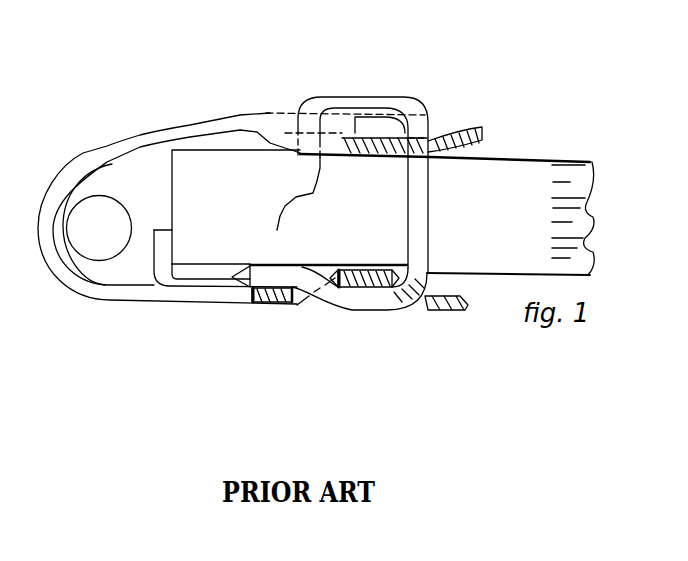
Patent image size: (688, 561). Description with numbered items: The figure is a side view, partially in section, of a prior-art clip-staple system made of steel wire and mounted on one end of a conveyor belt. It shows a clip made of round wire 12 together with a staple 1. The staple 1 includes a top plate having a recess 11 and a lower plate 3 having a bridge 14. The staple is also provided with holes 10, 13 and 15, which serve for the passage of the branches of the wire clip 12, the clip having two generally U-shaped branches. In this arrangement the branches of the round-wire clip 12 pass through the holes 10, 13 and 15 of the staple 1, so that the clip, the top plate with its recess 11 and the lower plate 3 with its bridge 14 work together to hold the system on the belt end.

The staple 1 is at (107, 146).
The lower plate 3 is at (190, 297).
The hole 10 is at (458, 123).
The recess 11 is at (377, 138).
The clip made of round wire 12 is at (360, 99).
The hole 13 is at (421, 303).
The bridge 14 is at (363, 287).
The hole 15 is at (303, 303).